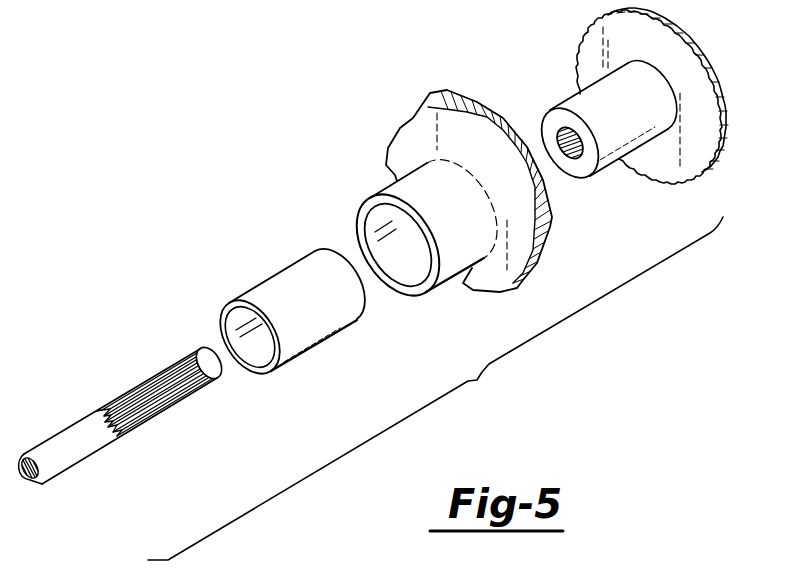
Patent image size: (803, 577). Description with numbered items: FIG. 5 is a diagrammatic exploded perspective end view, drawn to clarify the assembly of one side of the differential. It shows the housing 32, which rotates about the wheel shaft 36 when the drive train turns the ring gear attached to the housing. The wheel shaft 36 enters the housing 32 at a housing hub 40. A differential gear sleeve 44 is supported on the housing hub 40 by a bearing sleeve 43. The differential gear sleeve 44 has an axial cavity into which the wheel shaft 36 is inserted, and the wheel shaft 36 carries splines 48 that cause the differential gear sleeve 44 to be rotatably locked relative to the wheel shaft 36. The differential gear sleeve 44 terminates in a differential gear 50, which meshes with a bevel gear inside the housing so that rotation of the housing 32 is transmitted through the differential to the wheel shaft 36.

The housing 32 is at (417, 118).
The wheel shaft 36 is at (80, 453).
The housing hub 40 is at (410, 292).
The bearing sleeve 43 is at (303, 340).
The differential gear sleeve 44 is at (577, 170).
The splines 48 is at (180, 402).
The differential gear 50 is at (700, 43).